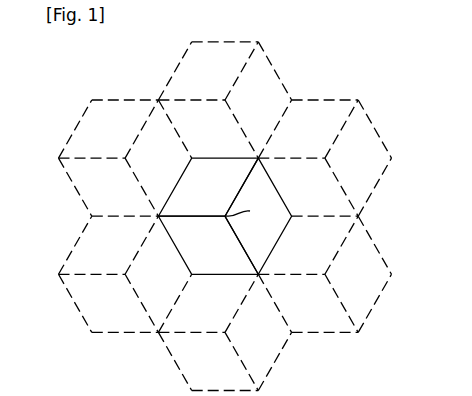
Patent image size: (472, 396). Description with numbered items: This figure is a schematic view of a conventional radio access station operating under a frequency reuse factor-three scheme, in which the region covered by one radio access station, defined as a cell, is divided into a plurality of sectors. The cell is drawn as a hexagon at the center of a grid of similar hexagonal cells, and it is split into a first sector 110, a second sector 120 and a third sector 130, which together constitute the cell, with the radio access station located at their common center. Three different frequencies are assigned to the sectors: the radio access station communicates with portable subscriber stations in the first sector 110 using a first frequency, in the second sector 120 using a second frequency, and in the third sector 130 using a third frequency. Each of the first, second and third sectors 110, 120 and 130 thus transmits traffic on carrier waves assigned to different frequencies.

The first sector 110 is at (211, 167).
The second sector 120 is at (176, 248).
The third sector 130 is at (268, 196).